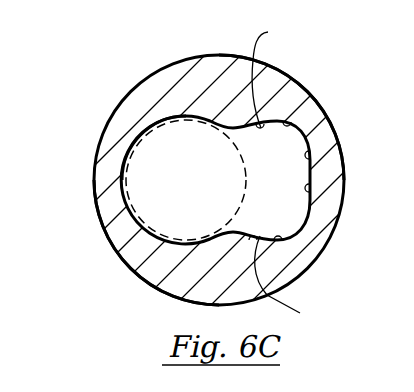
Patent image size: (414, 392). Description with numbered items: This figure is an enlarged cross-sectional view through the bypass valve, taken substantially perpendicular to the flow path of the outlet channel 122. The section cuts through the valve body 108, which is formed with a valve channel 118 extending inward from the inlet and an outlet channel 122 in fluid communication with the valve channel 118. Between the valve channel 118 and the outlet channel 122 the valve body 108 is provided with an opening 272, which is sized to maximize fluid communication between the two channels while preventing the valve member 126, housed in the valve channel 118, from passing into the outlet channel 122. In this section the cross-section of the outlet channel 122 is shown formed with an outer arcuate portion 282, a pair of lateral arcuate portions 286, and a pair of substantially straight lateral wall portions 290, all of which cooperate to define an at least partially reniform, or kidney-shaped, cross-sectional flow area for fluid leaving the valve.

The valve body 108 is at (207, 160).
The valve channel 118 is at (110, 148).
The outlet channel 122 is at (310, 117).
The valve member 126 is at (133, 242).
The opening 272 is at (267, 181).
The outer arcuate portion 282 is at (267, 180).
The lateral arcuate portions 286 is at (331, 174).
The substantially straight lateral wall portions 290 is at (307, 175).